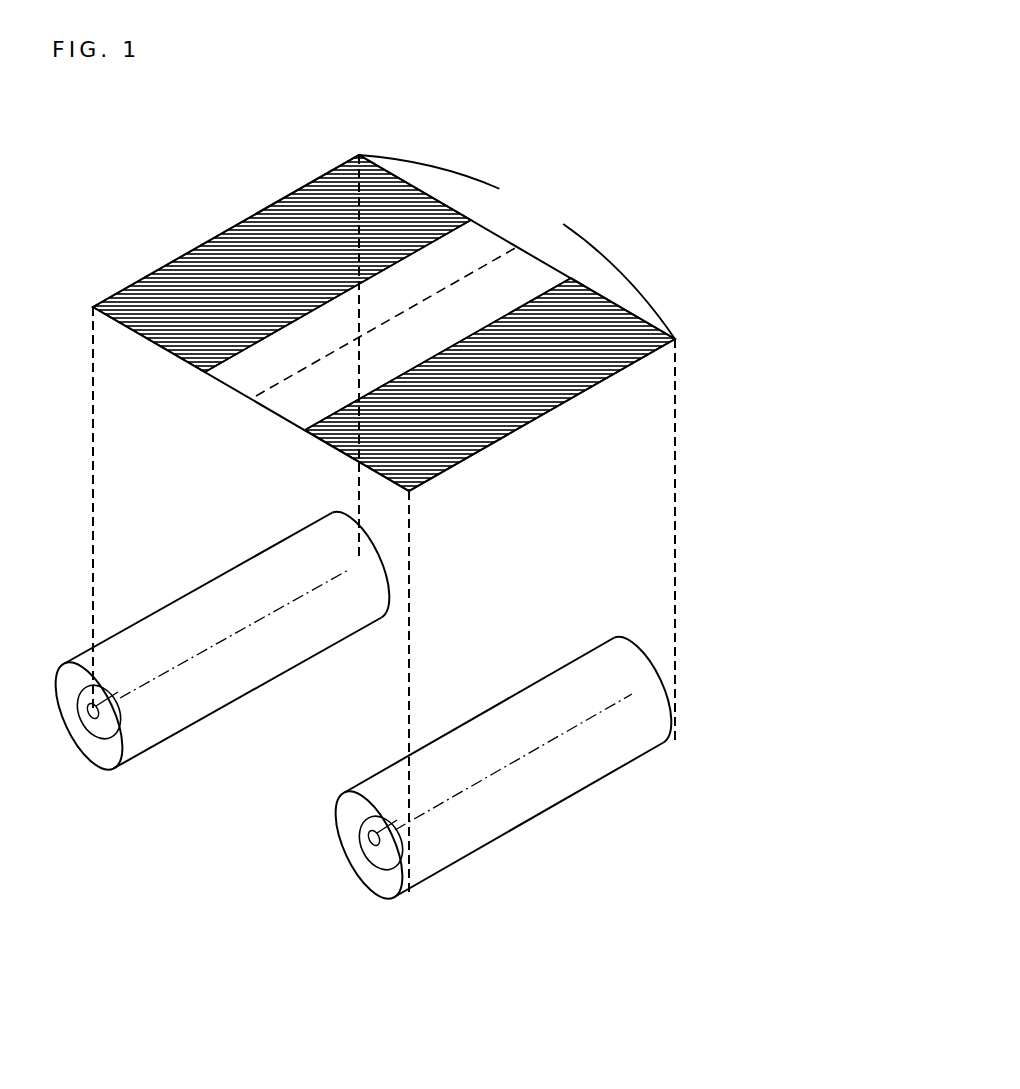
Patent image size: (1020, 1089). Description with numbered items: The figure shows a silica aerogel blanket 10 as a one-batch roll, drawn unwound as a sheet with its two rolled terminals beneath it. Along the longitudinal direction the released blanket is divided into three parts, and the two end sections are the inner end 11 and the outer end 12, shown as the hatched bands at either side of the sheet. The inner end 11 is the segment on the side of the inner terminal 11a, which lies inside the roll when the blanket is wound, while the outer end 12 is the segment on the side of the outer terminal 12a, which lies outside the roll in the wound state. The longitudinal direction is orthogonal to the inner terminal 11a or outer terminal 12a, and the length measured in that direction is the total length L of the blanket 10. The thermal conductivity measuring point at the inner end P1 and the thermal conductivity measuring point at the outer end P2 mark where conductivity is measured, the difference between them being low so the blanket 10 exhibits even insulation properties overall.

The silica aerogel blanket 10 is at (747, 257).
The inner end 11 is at (247, 240).
The outer end 12 is at (633, 362).
The inner terminal 11a is at (227, 637).
The outer terminal 12a is at (543, 817).
The thermal conductivity measuring point at the inner end P1 is at (390, 193).
The thermal conductivity measuring point at the outer end P2 is at (598, 320).
The total length L is at (517, 247).